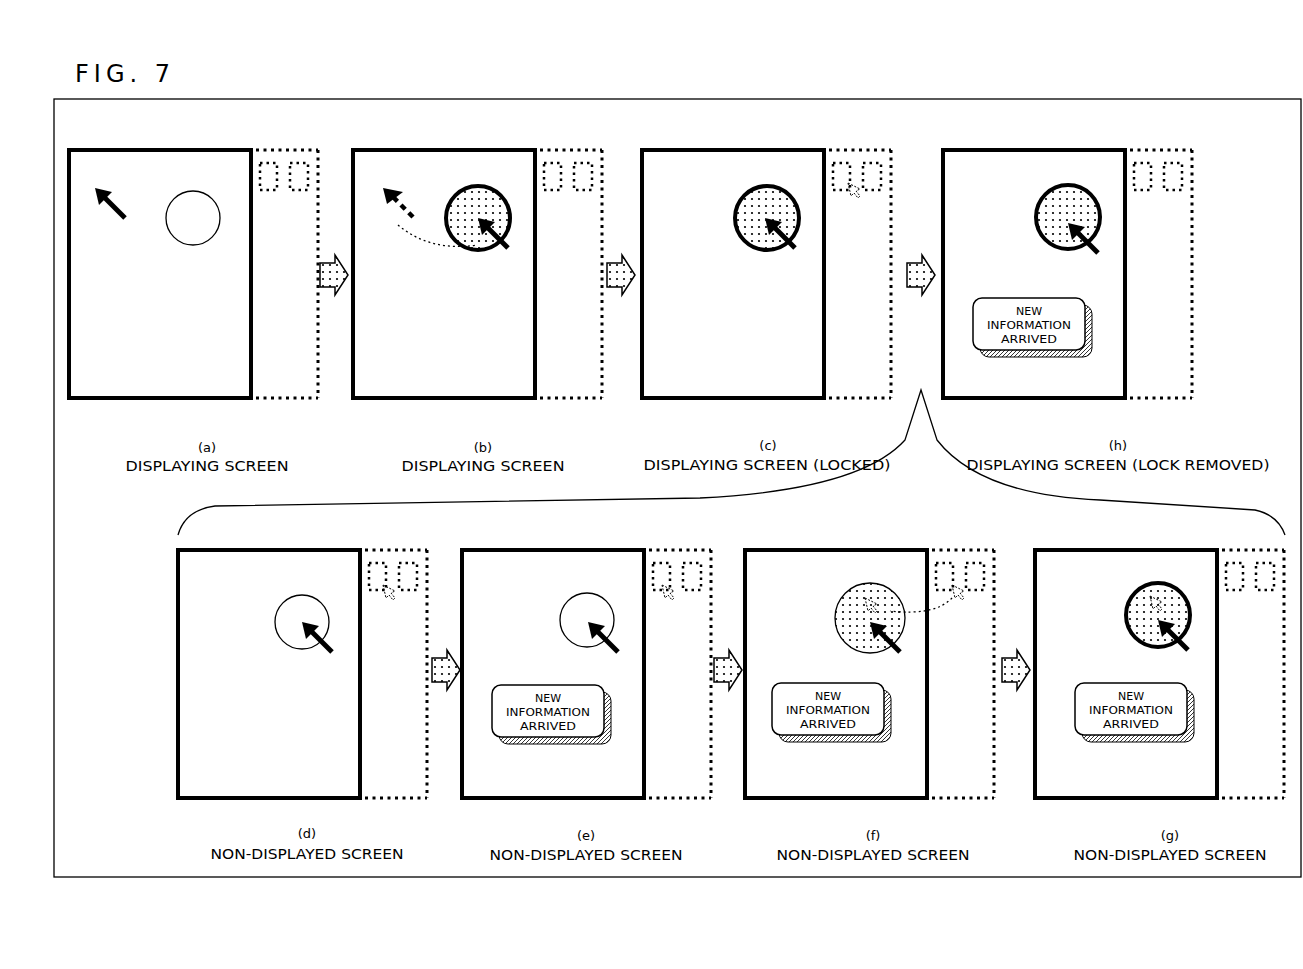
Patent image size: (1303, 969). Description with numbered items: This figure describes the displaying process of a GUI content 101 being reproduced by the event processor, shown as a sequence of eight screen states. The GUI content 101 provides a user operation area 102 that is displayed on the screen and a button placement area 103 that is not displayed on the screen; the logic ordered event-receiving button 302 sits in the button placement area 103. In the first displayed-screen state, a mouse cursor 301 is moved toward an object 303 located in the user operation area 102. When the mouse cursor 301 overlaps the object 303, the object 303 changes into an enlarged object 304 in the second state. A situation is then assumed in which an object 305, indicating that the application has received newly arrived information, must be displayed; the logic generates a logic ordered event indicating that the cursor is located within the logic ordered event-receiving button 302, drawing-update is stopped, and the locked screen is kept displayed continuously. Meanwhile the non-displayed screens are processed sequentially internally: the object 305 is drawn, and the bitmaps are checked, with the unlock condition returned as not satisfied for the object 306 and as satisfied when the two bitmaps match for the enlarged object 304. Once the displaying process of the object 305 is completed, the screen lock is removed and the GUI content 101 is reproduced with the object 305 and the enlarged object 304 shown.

The GUI content 101 is at (193, 276).
The user operation area 102 is at (178, 391).
The button placement area 103 is at (296, 393).
The mouse cursor 301 is at (120, 205).
The logic ordered event-receiving button 302 is at (275, 165).
The object 303 is at (196, 200).
The enlarged object 304 is at (468, 183).
The object 305 is at (548, 742).
The object 306 is at (861, 585).